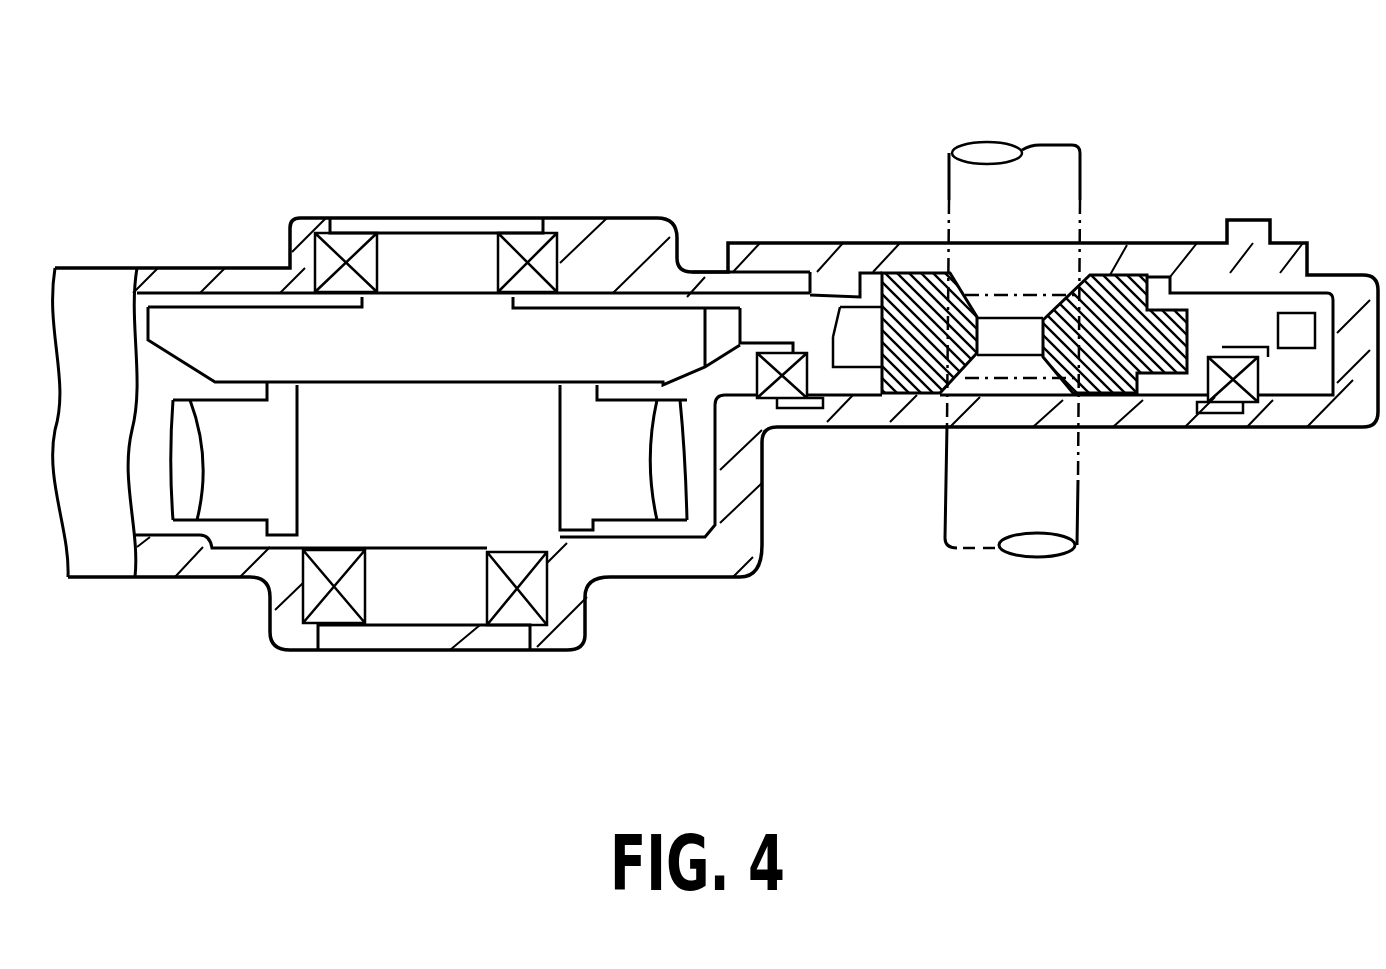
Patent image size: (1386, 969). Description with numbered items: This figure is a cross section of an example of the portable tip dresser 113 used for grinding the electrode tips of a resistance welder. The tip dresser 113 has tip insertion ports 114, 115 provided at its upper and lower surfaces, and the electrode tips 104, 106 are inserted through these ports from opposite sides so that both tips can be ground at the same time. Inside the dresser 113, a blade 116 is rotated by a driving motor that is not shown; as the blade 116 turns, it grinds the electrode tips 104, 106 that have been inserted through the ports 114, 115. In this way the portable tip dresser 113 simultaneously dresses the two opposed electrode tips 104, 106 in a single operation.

The portable tip dresser 113 is at (620, 204).
The blade 116 is at (900, 297).
The tip insertion port 114 is at (1097, 258).
The electrode tip 106 is at (1040, 182).
The tip insertion port 115 is at (1087, 410).
The electrode tip 104 is at (942, 500).